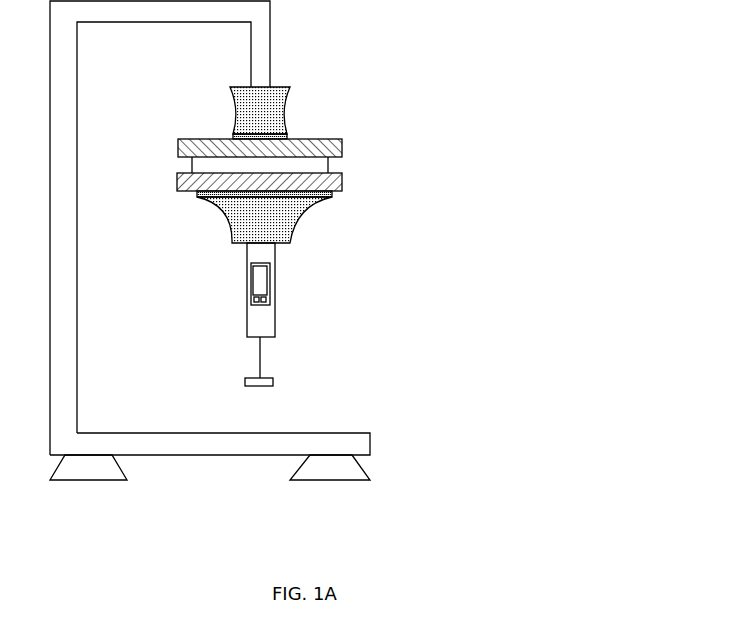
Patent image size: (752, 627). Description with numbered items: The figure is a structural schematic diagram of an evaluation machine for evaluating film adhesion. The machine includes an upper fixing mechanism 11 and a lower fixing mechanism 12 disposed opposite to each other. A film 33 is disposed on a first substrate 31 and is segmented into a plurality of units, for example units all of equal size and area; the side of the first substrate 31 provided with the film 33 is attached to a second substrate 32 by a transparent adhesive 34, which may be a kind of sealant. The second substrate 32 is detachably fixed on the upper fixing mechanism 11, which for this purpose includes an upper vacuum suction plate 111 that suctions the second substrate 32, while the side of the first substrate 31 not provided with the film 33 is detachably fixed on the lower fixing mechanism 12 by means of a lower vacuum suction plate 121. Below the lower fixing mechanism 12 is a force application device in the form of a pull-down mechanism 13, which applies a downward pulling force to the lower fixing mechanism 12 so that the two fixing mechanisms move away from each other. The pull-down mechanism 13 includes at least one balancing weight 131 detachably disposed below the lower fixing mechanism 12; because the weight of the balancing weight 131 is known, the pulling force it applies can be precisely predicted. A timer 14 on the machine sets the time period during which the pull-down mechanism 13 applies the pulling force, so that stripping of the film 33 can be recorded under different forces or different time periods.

The upper fixing mechanism 11 is at (267, 103).
The upper vacuum suction plate 111 is at (233, 135).
The lower fixing mechanism 12 is at (266, 231).
The lower vacuum suction plate 121 is at (208, 198).
The pull-down mechanism 13 is at (309, 326).
The balancing weight 131 is at (273, 382).
The timer 14 is at (265, 283).
The first substrate 31 is at (342, 188).
The second substrate 32 is at (342, 140).
The film 33 is at (342, 174).
The transparent adhesive 34 is at (330, 167).